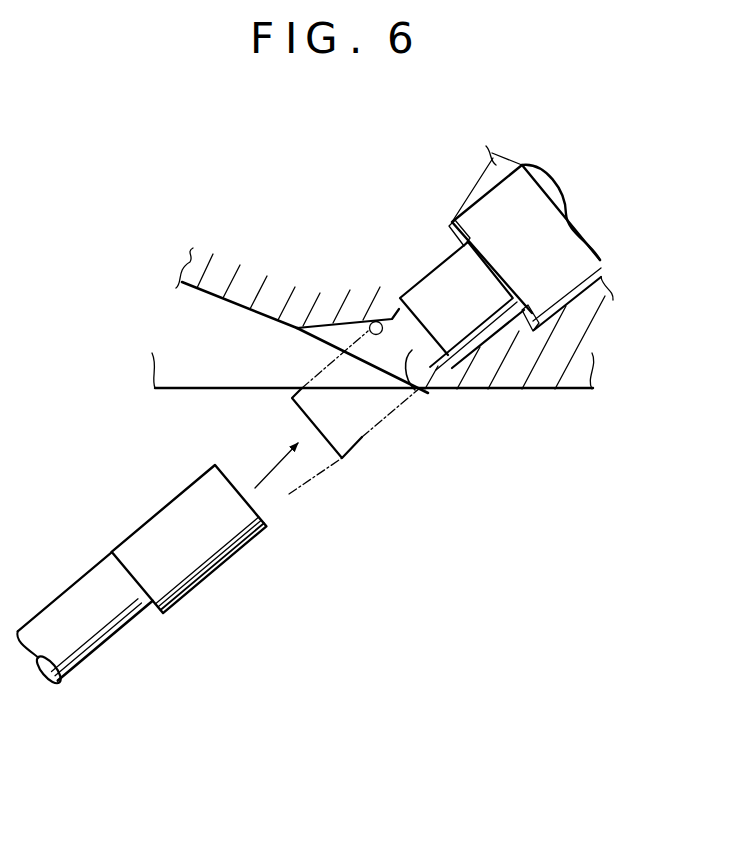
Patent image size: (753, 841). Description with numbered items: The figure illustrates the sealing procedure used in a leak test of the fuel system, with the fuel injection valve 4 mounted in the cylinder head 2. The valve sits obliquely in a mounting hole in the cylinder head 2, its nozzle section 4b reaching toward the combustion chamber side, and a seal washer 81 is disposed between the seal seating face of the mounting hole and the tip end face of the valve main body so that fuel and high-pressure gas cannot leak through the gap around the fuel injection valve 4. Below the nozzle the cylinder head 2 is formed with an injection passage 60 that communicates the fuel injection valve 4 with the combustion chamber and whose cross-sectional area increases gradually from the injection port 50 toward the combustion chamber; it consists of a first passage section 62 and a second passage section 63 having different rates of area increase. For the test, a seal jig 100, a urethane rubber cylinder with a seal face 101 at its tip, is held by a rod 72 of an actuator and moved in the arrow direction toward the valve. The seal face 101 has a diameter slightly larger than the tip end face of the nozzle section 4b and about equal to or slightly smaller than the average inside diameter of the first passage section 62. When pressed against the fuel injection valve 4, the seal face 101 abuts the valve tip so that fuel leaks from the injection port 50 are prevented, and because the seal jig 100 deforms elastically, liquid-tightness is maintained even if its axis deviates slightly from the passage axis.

The cylinder head 2 is at (293, 236).
The fuel injection valve 4 is at (573, 256).
The nozzle section 4b is at (428, 291).
The injection port 50 is at (421, 392).
The injection passage 60 is at (340, 333).
The first passage section 62 is at (371, 321).
The second passage section 63 is at (338, 344).
The rod 72 is at (119, 627).
The seal washer 81 is at (452, 222).
The seal jig 100 is at (362, 438).
The seal face 101 is at (267, 521).